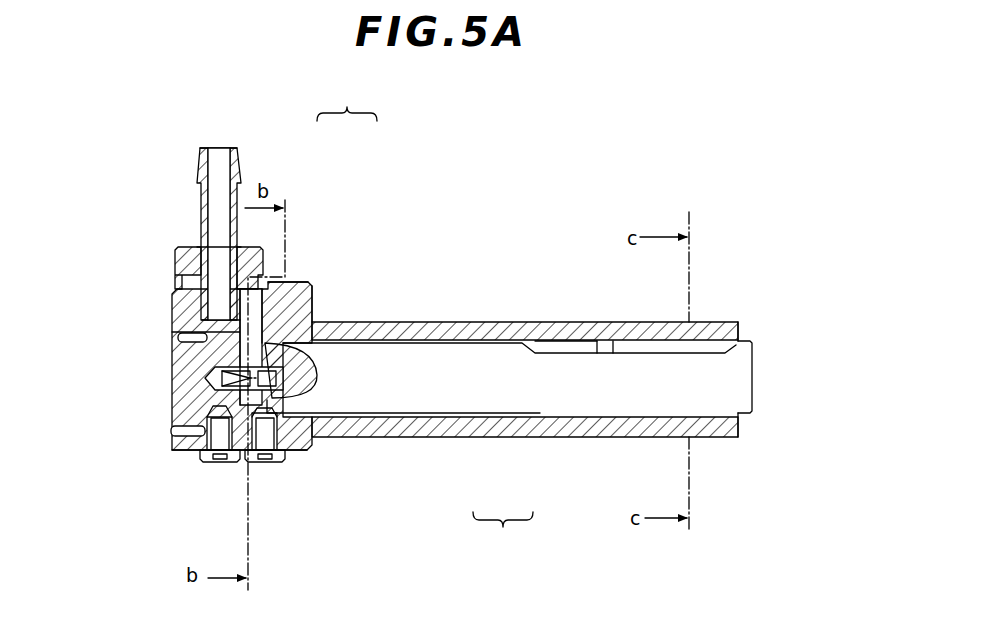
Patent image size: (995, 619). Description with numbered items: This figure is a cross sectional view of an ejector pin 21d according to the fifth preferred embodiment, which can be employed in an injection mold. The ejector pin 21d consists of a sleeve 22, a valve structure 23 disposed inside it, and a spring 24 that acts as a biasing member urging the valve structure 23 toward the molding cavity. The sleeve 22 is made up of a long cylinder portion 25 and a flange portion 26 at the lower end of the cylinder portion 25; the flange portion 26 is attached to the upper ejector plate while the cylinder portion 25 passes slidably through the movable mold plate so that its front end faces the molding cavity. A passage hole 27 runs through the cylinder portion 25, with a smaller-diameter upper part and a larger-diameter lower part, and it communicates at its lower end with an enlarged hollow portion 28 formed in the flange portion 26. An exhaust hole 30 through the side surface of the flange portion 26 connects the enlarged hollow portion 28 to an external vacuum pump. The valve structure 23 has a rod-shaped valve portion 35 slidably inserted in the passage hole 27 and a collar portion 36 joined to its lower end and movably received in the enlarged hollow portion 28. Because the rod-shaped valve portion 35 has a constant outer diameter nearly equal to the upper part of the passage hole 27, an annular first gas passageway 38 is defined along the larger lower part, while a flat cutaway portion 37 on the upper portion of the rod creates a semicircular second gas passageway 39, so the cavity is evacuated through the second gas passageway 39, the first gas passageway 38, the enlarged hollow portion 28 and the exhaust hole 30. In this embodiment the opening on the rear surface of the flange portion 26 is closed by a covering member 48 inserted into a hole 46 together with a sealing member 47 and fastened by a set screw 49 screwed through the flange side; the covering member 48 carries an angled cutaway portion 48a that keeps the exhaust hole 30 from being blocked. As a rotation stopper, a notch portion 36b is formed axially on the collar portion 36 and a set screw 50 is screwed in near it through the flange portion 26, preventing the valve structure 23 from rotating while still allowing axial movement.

The ejector pin 21d is at (586, 150).
The sleeve 22 is at (347, 101).
The valve structure 23 is at (503, 531).
The spring 24 is at (185, 368).
The cylinder portion 25 is at (330, 320).
The flange portion 26 is at (293, 280).
The passage hole 27 is at (483, 342).
The enlarged hollow portion 28 is at (233, 340).
The exhaust hole 30 is at (173, 302).
The rod-shaped valve portion 35 is at (503, 388).
The collar portion 36 is at (317, 386).
The notch portion 36b is at (300, 425).
The cutaway portion 37 is at (555, 350).
The first gas passageway 38 is at (408, 342).
The second gas passageway 39 is at (622, 350).
The hole 46 is at (192, 450).
The sealing member 47 is at (172, 430).
The covering member 48 is at (182, 393).
The angled cutaway portion 48a is at (172, 343).
The set screw 49 is at (230, 465).
The set screw 50 is at (267, 443).